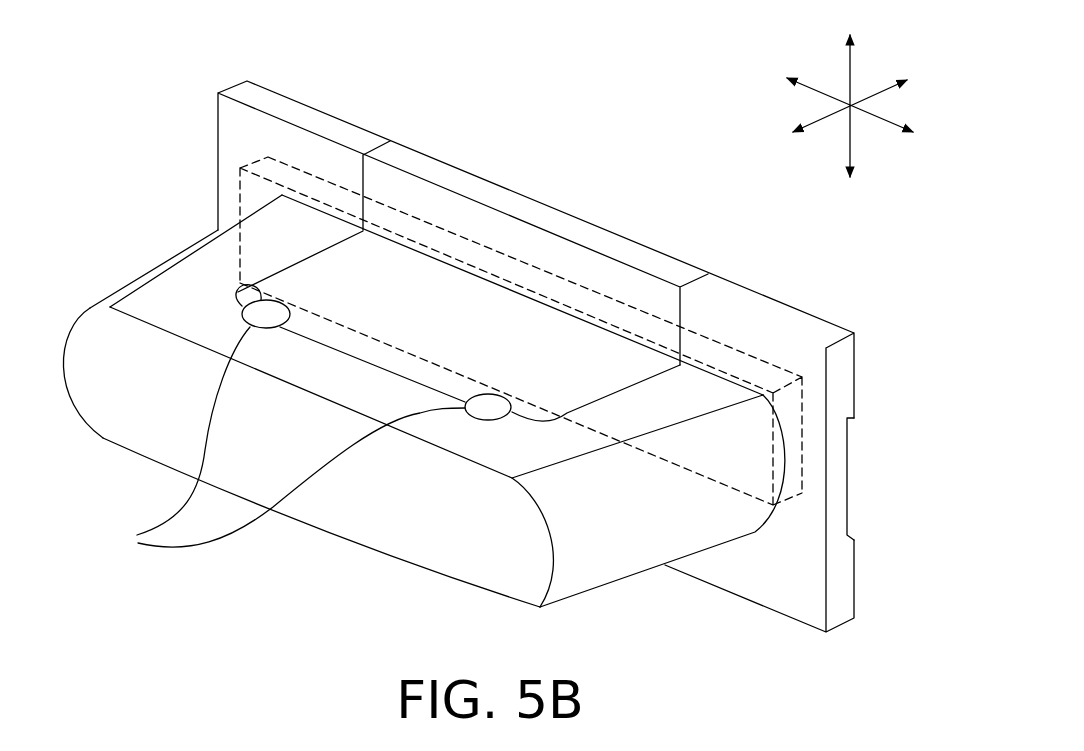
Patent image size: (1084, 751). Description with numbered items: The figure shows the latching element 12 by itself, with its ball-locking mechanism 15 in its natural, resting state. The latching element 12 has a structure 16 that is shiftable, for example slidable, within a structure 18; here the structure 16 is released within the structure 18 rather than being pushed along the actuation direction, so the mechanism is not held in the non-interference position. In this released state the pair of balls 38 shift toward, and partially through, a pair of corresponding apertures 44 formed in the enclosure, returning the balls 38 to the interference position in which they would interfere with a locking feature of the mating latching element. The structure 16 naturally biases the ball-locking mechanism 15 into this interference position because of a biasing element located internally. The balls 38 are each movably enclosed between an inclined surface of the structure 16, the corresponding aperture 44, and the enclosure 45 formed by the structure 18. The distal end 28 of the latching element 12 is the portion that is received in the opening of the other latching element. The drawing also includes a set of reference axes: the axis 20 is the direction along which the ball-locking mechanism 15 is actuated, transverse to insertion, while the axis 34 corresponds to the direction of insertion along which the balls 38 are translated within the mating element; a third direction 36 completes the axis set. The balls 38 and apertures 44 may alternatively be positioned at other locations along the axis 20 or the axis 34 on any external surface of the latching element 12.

The latching element 12 is at (640, 562).
The ball-locking mechanism 15 is at (492, 400).
The structure 16 is at (792, 402).
The structure 18 is at (848, 548).
The axis 20 is at (890, 120).
The distal end 28 is at (435, 552).
The axis 34 is at (878, 93).
The axis direction 36 is at (848, 70).
The balls 38 is at (262, 308).
The apertures 44 is at (284, 441).
The enclosure 45 is at (98, 304).